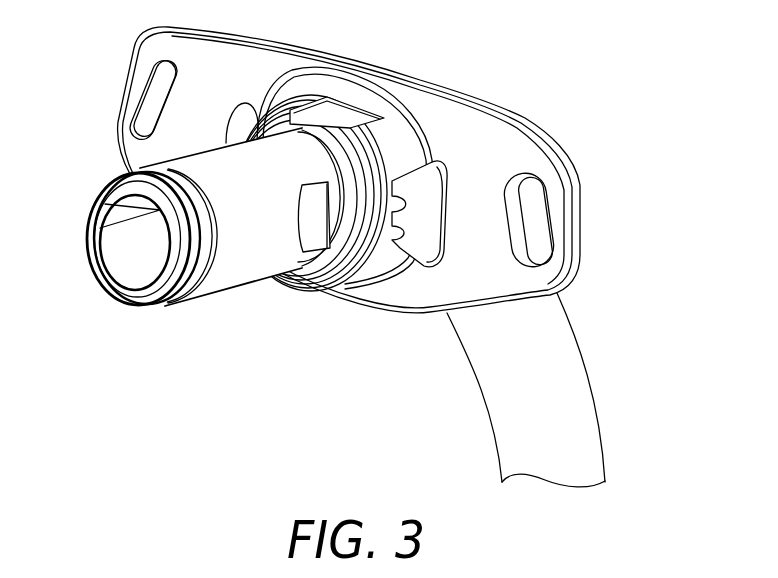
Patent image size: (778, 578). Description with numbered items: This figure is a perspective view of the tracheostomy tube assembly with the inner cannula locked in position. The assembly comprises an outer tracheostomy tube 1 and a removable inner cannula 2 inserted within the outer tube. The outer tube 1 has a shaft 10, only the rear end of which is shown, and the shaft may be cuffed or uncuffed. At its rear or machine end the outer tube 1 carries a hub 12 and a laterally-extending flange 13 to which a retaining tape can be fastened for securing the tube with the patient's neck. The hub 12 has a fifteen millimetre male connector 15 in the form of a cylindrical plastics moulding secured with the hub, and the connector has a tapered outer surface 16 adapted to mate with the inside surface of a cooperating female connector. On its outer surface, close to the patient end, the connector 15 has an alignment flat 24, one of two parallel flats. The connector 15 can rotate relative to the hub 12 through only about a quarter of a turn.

The outer tracheostomy tube 1 is at (340, 257).
The inner cannula 2 is at (84, 269).
The shaft 10 is at (590, 393).
The hub 12 is at (388, 157).
The flange 13 is at (500, 153).
The male connector 15 is at (196, 232).
The tapered outer surface 16 is at (272, 265).
The alignment flat 24 is at (318, 235).